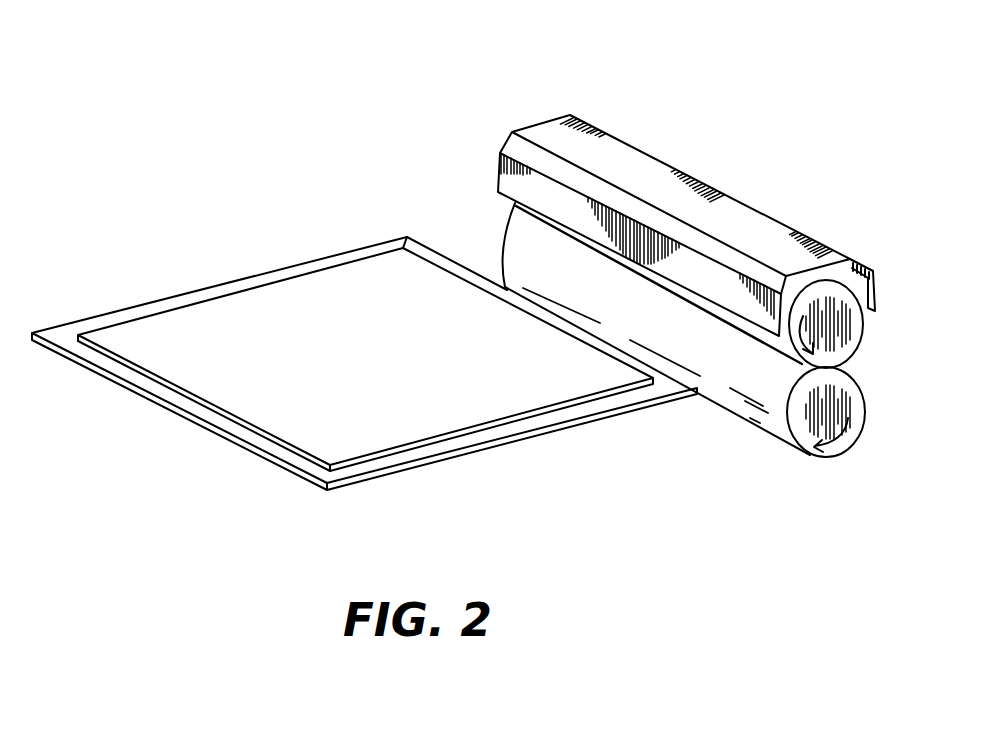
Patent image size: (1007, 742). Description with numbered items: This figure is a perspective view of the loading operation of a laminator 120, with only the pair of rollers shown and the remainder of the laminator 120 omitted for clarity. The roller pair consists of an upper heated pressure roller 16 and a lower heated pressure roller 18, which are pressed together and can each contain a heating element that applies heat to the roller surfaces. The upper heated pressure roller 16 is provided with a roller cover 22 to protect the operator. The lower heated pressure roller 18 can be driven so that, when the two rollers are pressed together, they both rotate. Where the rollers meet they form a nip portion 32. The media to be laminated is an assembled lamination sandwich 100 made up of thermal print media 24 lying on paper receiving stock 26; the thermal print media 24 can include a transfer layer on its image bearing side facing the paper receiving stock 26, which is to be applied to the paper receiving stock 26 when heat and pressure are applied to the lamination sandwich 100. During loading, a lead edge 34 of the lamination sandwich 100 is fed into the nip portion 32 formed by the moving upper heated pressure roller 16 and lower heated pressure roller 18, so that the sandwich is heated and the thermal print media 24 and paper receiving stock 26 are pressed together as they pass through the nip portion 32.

The lamination sandwich 100 is at (327, 503).
The upper heated pressure roller 16 is at (513, 216).
The lower heated pressure roller 18 is at (730, 372).
The roller cover 22 is at (700, 217).
The thermal print media 24 is at (205, 378).
The paper receiving stock 26 is at (137, 312).
The nip portion 32 is at (845, 378).
The lead edge 34 is at (425, 240).
The laminator 120 is at (522, 126).